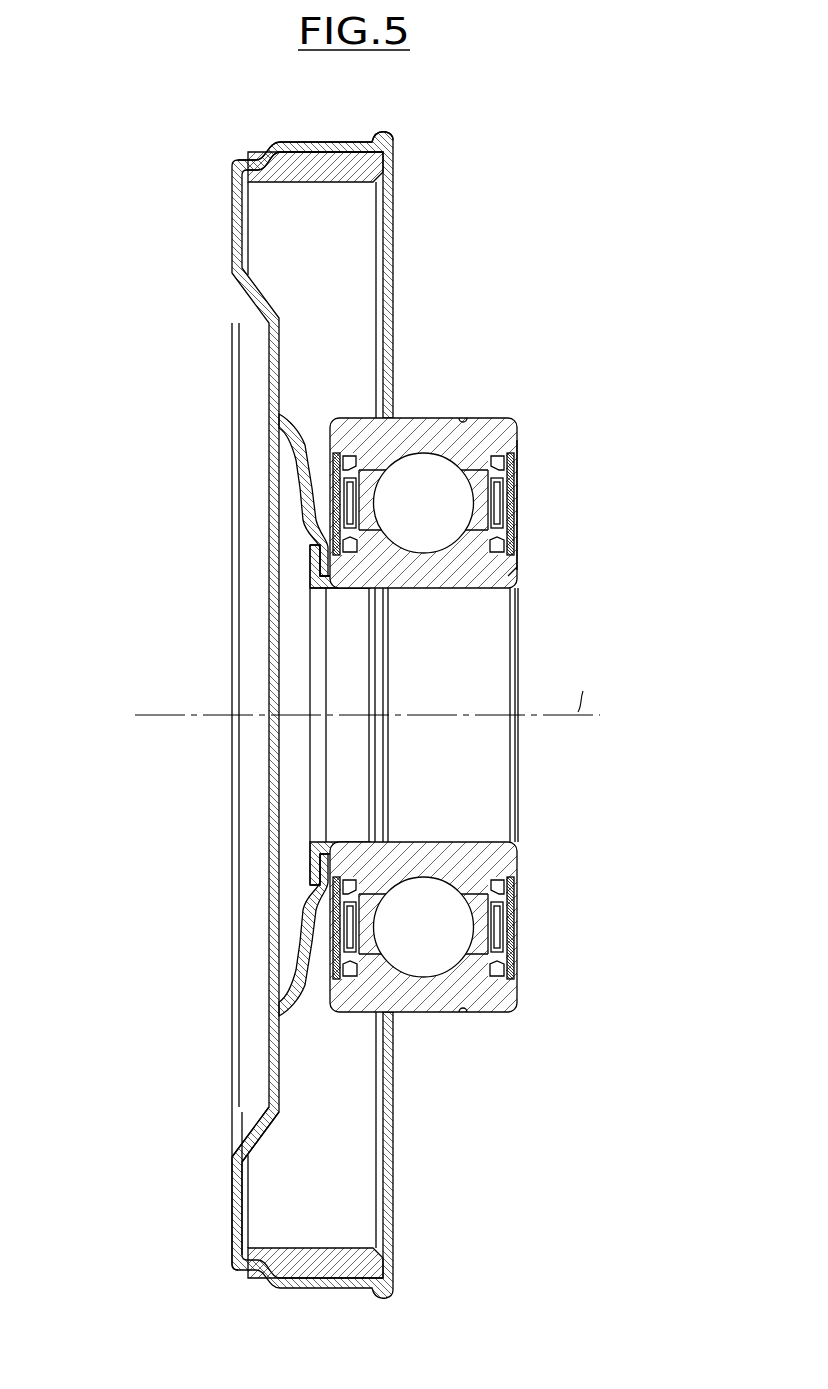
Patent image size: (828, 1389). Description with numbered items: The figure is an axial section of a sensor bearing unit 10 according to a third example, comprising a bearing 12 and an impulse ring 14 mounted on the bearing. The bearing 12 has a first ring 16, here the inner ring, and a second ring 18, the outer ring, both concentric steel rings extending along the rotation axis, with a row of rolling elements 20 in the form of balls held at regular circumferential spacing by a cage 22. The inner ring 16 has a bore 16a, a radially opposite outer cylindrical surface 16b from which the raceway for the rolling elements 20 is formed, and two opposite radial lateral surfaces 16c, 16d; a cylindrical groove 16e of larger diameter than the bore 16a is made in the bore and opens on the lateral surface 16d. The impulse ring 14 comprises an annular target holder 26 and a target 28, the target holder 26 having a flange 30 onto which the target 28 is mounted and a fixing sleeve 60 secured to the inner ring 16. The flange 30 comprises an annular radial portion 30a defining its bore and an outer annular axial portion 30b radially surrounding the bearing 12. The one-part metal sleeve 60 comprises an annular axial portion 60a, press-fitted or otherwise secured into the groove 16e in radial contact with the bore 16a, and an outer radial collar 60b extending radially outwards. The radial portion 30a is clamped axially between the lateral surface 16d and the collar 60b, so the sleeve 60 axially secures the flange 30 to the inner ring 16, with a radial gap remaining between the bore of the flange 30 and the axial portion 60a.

The sensor bearing unit 10 is at (531, 271).
The bearing 12 is at (460, 490).
The impulse ring 14 is at (227, 252).
The first ring 16 is at (453, 927).
The bore 16a is at (456, 591).
The outer cylindrical surface 16b is at (518, 520).
The radial lateral surface 16c is at (518, 566).
The radial lateral surface 16d is at (316, 882).
The cylindrical groove 16e is at (343, 843).
The second ring 18 is at (511, 995).
The rolling elements 20 is at (438, 937).
The cage 22 is at (518, 946).
The target holder 26 is at (262, 1082).
The target 28 is at (394, 170).
The flange 30 is at (305, 990).
The annular radial portion 30a is at (302, 494).
The outer annular axial portion 30b is at (330, 146).
The fixing sleeve 60 is at (267, 568).
The annular axial portion 60a is at (347, 590).
The outer radial collar 60b is at (320, 538).